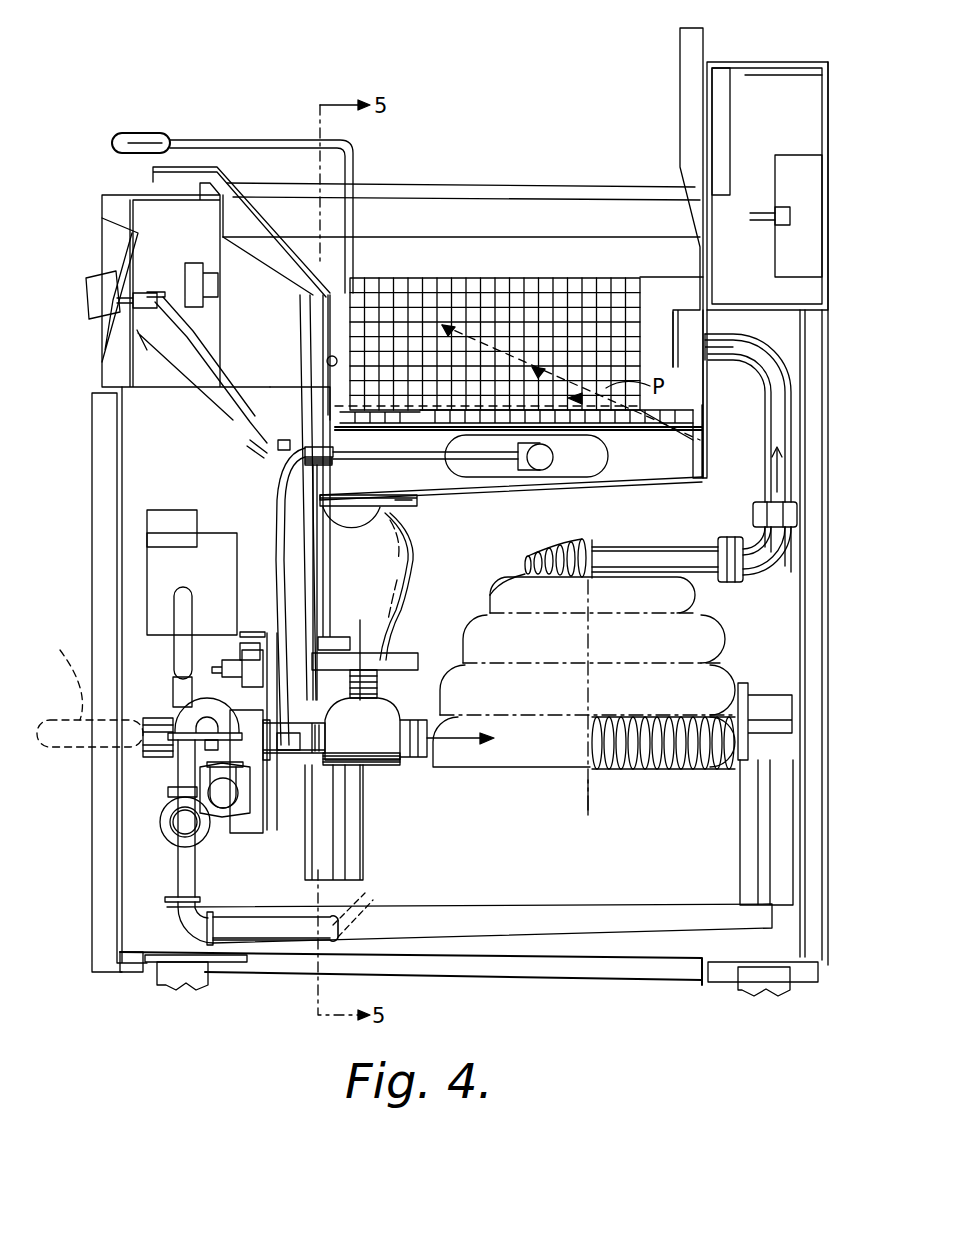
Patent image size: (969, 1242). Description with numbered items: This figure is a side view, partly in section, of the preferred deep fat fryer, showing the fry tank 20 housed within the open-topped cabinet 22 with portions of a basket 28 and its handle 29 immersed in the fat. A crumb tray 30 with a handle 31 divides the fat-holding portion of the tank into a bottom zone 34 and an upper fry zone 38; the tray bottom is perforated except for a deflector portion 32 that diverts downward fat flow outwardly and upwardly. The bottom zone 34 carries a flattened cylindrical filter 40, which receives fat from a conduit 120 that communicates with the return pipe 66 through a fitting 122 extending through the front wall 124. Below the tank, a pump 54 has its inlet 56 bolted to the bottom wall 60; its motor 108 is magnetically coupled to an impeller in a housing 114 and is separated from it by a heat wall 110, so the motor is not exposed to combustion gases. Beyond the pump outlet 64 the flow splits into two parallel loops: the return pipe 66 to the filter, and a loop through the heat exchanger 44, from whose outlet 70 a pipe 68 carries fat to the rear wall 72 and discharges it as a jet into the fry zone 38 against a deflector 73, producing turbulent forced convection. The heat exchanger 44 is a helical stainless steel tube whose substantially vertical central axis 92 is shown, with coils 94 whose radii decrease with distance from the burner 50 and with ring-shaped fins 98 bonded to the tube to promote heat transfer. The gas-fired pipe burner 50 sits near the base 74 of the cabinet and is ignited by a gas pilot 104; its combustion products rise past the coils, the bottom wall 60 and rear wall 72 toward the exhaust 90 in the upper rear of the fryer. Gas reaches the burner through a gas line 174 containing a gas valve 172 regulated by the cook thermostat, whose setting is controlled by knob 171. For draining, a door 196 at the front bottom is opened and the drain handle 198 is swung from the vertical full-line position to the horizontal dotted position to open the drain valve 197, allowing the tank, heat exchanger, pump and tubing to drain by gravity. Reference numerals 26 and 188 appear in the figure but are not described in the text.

The fry tank 20 is at (533, 185).
The cabinet 22 is at (102, 210).
The chute 26 is at (270, 262).
The basket 28 is at (568, 278).
The handle 29 is at (214, 140).
The crumb tray 30 is at (338, 398).
The handle 31 is at (155, 172).
The deflector portion 32 is at (703, 445).
The bottom zone 34 is at (518, 454).
The fry zone 38 is at (659, 339).
The filter 40 is at (607, 446).
The heat exchanger 44 is at (705, 613).
The burner 50 is at (556, 906).
The pump 54 is at (413, 540).
The pump inlet 56 is at (400, 507).
The bottom wall 60 is at (650, 481).
The pump outlet 64 is at (380, 686).
The return pipe 66 is at (277, 547).
The pipe 68 is at (763, 422).
The heat exchanger outlet 70 is at (595, 550).
The rear wall 72 is at (707, 383).
The deflector 73 is at (672, 312).
The base 74 is at (623, 985).
The exhaust 90 is at (773, 60).
The central axis 92 is at (586, 805).
The heat exchanger coils 94 is at (470, 630).
The ring-shaped fins 98 is at (540, 557).
The gas pilot 104 is at (370, 905).
The pump motor 108 is at (222, 535).
The heat wall 110 is at (308, 508).
The impeller housing 114 is at (407, 572).
The conduit 120 is at (372, 460).
The fitting 122 is at (333, 450).
The front wall 124 is at (328, 358).
The knob 171 is at (90, 285).
The gas valve 172 is at (237, 823).
The gas line 174 is at (190, 780).
The box 188 is at (763, 222).
The door 196 is at (90, 515).
The drain valve 197 is at (150, 742).
The drain handle 198 is at (170, 653).